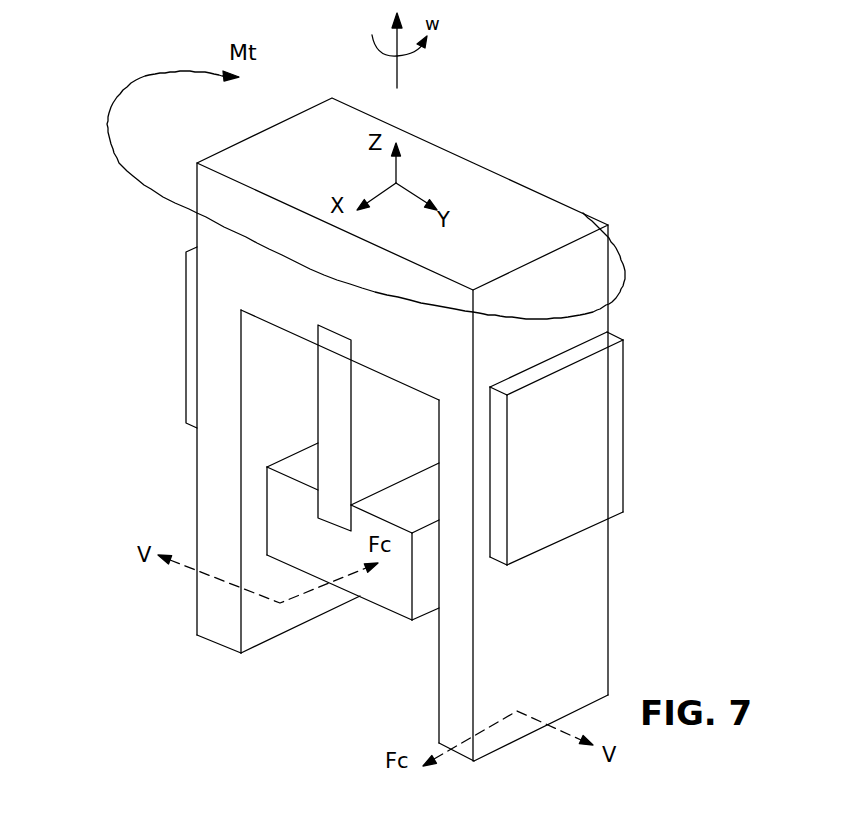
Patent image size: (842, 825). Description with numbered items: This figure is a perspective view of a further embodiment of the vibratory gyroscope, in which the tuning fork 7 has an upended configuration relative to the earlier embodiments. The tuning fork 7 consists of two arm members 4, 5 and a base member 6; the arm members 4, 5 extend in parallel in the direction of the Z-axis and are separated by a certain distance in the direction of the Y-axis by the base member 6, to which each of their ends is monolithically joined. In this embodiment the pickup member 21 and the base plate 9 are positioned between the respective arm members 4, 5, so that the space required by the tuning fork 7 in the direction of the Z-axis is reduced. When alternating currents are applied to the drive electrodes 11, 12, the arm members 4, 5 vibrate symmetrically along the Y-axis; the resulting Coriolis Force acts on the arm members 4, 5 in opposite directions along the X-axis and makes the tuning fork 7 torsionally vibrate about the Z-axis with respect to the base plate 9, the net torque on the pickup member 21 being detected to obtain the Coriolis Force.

The arm member 4 is at (562, 667).
The arm member 5 is at (209, 632).
The base member 6 is at (237, 262).
The tuning fork 7 is at (568, 577).
The base plate 9 is at (397, 588).
The drive electrode 11 is at (577, 470).
The drive electrode 12 is at (186, 393).
The pickup member 21 is at (337, 425).